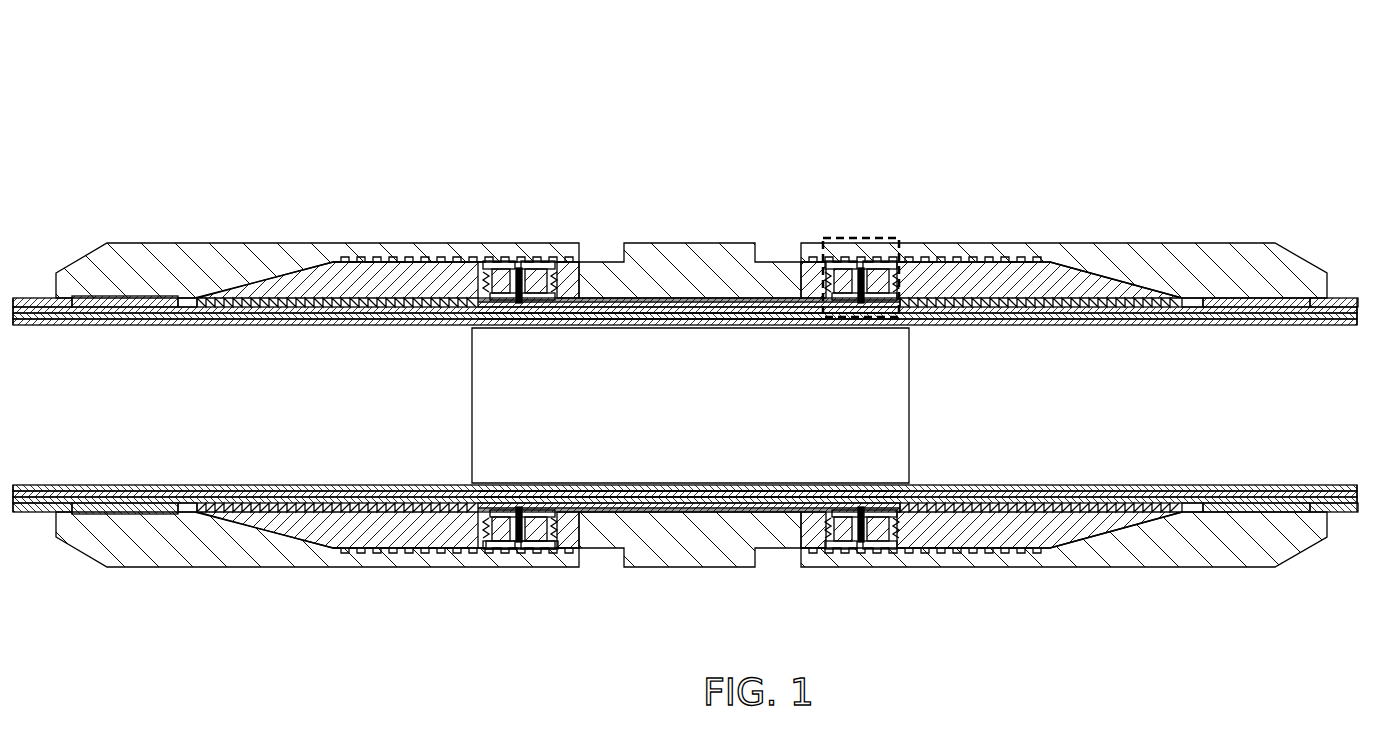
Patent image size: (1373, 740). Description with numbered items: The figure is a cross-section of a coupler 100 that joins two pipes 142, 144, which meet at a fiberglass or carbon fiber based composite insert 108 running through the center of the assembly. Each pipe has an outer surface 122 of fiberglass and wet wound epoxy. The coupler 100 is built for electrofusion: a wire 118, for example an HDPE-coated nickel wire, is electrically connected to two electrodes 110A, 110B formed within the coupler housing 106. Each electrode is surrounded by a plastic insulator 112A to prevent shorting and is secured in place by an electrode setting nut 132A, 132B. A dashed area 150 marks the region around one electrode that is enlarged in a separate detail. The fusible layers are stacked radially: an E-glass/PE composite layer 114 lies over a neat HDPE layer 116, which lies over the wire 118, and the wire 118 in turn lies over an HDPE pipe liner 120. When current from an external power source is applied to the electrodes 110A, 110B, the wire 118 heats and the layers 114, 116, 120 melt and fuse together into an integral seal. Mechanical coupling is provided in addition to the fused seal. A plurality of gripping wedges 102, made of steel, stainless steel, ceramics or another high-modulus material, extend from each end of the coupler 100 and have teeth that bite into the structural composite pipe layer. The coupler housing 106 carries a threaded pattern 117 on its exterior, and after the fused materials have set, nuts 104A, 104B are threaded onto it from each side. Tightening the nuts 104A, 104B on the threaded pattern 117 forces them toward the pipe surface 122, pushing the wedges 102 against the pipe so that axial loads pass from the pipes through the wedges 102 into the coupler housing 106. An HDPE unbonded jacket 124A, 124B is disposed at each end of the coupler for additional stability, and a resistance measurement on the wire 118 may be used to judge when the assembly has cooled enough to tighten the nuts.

The coupler 100 is at (1252, 107).
The gripping wedges 102 is at (306, 306).
The nut 104A is at (178, 255).
The nut 104B is at (1140, 243).
The coupler housing 106 is at (612, 264).
The composite insert 108 is at (480, 350).
The electrode 110A is at (518, 266).
The electrode 110B is at (855, 284).
The plastic insulator 112A is at (506, 308).
The E-glass/PE composite layer 114 is at (642, 300).
The neat HDPE layer 116 is at (613, 313).
The threaded pattern 117 is at (495, 550).
The wire 118 is at (675, 320).
The HDPE pipe liner 120 is at (735, 328).
The outer surface 122 is at (1007, 320).
The HDPE unbonded jacket 124A is at (45, 298).
The HDPE unbonded jacket 124B is at (1350, 298).
The electrode setting nut 132A is at (488, 266).
The electrode setting nut 132B is at (840, 270).
The pipe 142 is at (235, 423).
The pipe 144 is at (1128, 423).
The area 150 is at (838, 320).